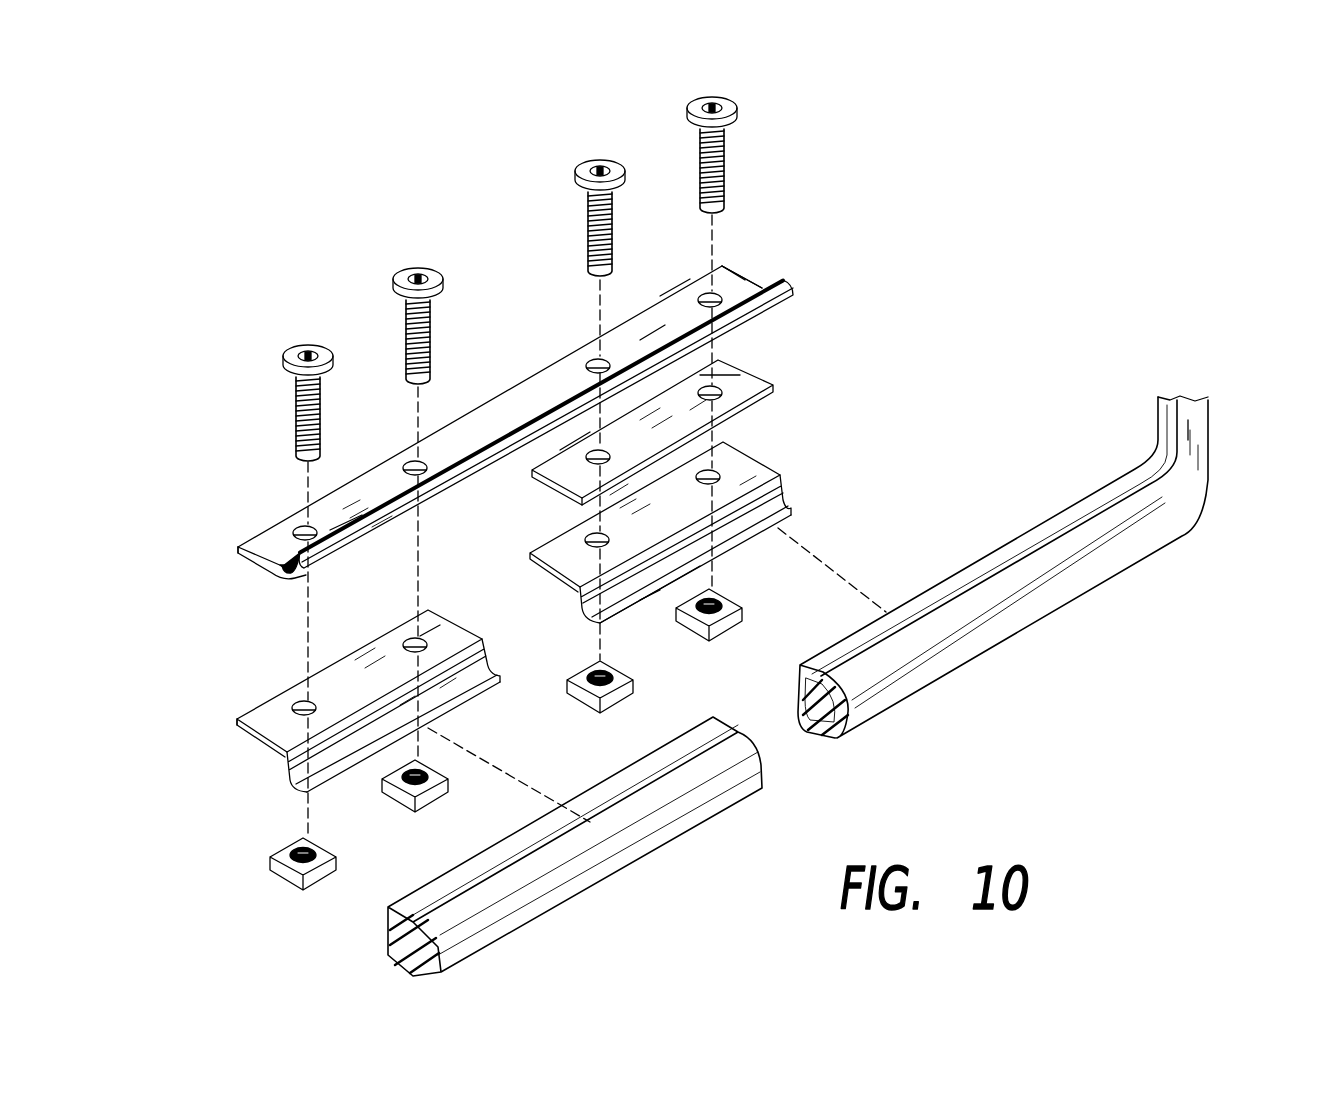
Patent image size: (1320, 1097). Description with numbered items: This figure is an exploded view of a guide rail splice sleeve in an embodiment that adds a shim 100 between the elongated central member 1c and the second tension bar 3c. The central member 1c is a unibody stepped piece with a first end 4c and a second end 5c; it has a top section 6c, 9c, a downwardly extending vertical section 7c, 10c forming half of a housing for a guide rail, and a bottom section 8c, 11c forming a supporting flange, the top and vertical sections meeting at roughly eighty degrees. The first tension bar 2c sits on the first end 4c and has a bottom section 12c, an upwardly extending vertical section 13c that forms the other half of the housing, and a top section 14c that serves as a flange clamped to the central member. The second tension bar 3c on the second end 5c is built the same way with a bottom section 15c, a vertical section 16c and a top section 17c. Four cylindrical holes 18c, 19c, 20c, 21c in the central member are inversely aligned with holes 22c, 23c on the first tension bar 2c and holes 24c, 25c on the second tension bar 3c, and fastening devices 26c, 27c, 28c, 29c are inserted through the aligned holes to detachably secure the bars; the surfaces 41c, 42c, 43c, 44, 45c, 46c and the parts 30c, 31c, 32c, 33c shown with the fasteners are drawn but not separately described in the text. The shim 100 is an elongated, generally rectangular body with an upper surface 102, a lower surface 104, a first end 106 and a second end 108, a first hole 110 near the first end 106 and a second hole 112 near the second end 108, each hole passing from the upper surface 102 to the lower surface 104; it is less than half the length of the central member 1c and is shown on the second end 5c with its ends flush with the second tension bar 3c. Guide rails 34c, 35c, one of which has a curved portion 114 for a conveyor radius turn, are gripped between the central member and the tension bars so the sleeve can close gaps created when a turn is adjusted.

The elongated central member 1c is at (520, 403).
The first tension bar 2c is at (372, 685).
The second tension bar 3c is at (658, 541).
The first end of central member 4c is at (380, 462).
The second end of central member 5c is at (675, 293).
The top section of central member 6c is at (362, 528).
The vertical section of central member 7c is at (283, 572).
The bottom section of central member 8c is at (257, 545).
The top section of central member 9c is at (794, 292).
The vertical section of central member 10c is at (762, 281).
The bottom section of central member 11c is at (715, 262).
The bottom section of first tension bar 12c is at (487, 692).
The vertical section of first tension bar 13c is at (493, 657).
The top section of first tension bar 14c is at (436, 627).
The bottom section of second tension bar 15c is at (620, 610).
The vertical section of second tension bar 16c is at (590, 598).
The top section of second tension bar 17c is at (542, 551).
The hole 18c is at (300, 527).
The hole 19c is at (420, 463).
The hole 20c is at (595, 358).
The hole 21c is at (707, 291).
The hole 22c is at (296, 705).
The hole 23c is at (401, 645).
The hole 24c is at (655, 600).
The hole 25c is at (716, 470).
The fastening device 26c is at (293, 352).
The fastening device 27c is at (403, 278).
The fastening device 28c is at (585, 170).
The fastening device 29c is at (697, 107).
The nut 30c is at (317, 877).
The nut 31c is at (432, 797).
The nut 32c is at (608, 700).
The nut 33c is at (720, 627).
The guide rail 34c is at (585, 875).
The guide rail 35c is at (1046, 567).
The bar end face 41c is at (240, 560).
The bar end corner 42c is at (747, 270).
The clip end face 43c is at (235, 730).
The clip top surface 44 is at (432, 628).
The clip wall surface 45c is at (557, 562).
The clip top surface 46c is at (750, 470).
The shim 100 is at (658, 418).
The upper surface 102 is at (562, 473).
The lower surface 104 is at (582, 505).
The first end 106 is at (580, 440).
The second end 108 is at (723, 370).
The first hole 110 is at (607, 452).
The second hole 112 is at (723, 390).
The curved portion 114 is at (1202, 455).